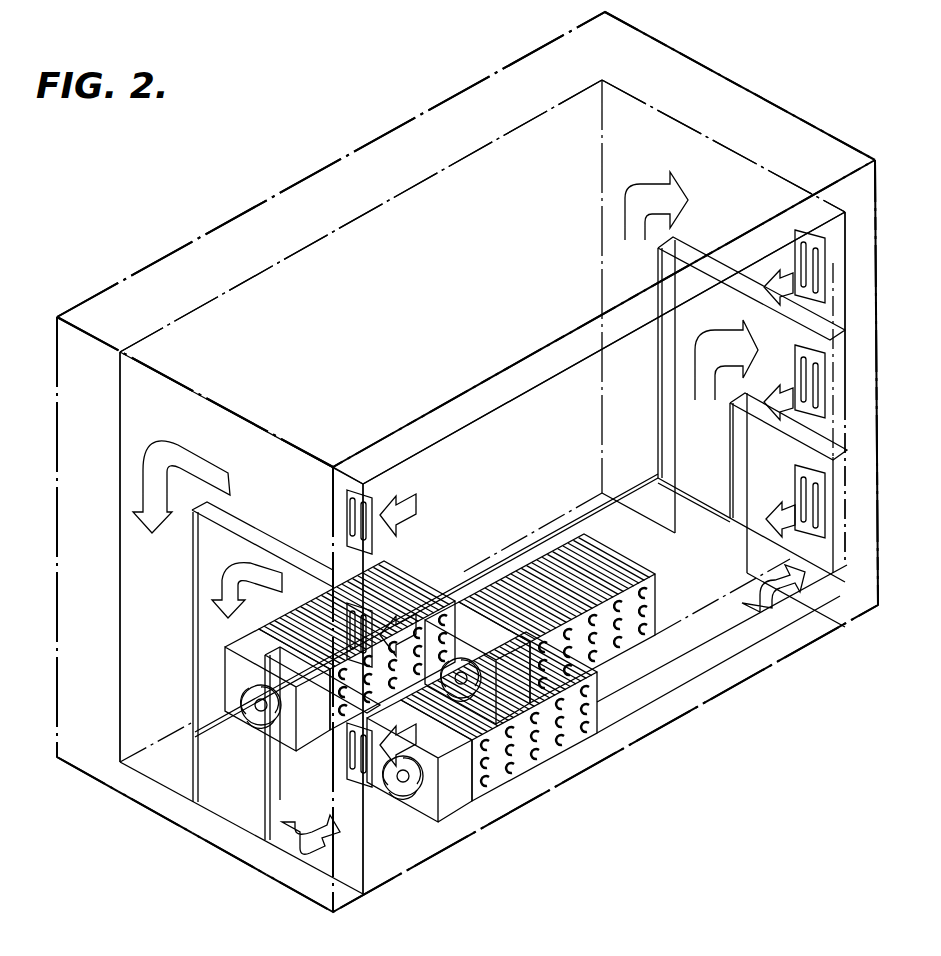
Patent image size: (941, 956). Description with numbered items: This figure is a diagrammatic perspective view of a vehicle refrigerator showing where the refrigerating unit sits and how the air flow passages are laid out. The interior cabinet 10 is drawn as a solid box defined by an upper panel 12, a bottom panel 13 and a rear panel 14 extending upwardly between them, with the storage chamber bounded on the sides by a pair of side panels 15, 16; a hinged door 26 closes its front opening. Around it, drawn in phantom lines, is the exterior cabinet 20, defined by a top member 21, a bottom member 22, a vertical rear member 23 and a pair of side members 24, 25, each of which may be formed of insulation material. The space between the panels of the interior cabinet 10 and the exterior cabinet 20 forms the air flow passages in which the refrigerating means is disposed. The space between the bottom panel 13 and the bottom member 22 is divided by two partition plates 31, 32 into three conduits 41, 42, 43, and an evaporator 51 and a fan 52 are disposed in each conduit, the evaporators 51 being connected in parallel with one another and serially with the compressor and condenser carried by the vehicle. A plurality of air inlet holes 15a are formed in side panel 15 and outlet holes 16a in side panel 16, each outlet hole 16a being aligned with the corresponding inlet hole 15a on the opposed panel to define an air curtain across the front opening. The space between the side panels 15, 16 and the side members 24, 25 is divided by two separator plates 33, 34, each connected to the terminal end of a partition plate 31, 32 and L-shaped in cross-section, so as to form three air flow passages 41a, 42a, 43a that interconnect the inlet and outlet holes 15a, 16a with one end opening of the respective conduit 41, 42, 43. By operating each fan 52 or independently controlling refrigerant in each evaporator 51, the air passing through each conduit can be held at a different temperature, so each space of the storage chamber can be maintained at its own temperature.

The interior cabinet 10 is at (738, 153).
The upper panel 12 is at (690, 132).
The bottom panel 13 is at (650, 688).
The rear panel 14 is at (310, 243).
The side panel 15 is at (848, 240).
The air inlet holes 15a is at (824, 276).
The side panel 16 is at (372, 850).
The air outlet holes 16a is at (348, 516).
The exterior cabinet 20 is at (377, 138).
The top member 21 is at (670, 62).
The bottom member 22 is at (629, 750).
The vertical rear member 23 is at (108, 287).
The side member 24 is at (857, 148).
The side member 25 is at (107, 344).
The hinged door 26 is at (540, 362).
The partition plate 31 is at (180, 800).
The partition plate 32 is at (218, 847).
The separator plate 33 is at (245, 527).
The separator plate 34 is at (263, 733).
The conduit 41 is at (508, 493).
The air flow passage 41a is at (661, 190).
The conduit 42 is at (648, 538).
The air flow passage 42a is at (754, 345).
The conduit 43 is at (675, 650).
The air flow passage 43a is at (780, 470).
The evaporator 51 is at (303, 610).
The fan 52 is at (247, 653).